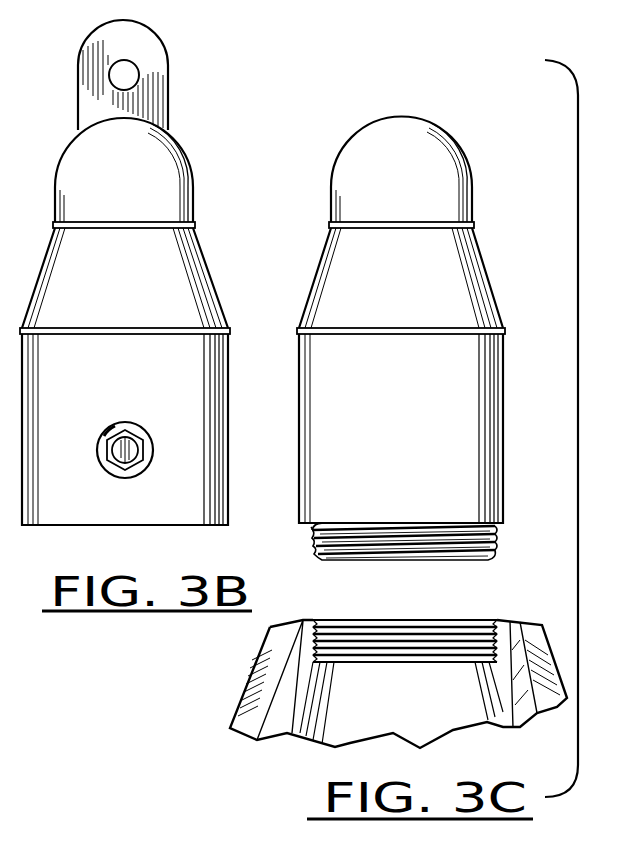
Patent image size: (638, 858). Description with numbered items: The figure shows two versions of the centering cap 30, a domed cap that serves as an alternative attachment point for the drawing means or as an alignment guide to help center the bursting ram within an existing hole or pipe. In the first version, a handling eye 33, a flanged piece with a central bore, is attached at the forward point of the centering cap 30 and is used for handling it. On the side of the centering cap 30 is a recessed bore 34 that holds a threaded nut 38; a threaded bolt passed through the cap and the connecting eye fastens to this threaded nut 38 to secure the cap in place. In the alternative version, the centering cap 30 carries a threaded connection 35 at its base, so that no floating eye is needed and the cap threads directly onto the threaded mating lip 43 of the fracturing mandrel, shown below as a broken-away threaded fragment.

In FIG. 3B, the centering cap 30 is at (92, 166).
In FIG. 3C, the centering cap 30 is at (372, 176).
In FIG. 3B, the handling eye 33 is at (157, 30).
In FIG. 3B, the recessed bore 34 is at (110, 468).
In FIG. 3C, the threaded connection 35 is at (496, 540).
In FIG. 3B, the threaded nut 38 is at (113, 437).
In FIG. 3C, the threaded mating lip 43 is at (405, 636).